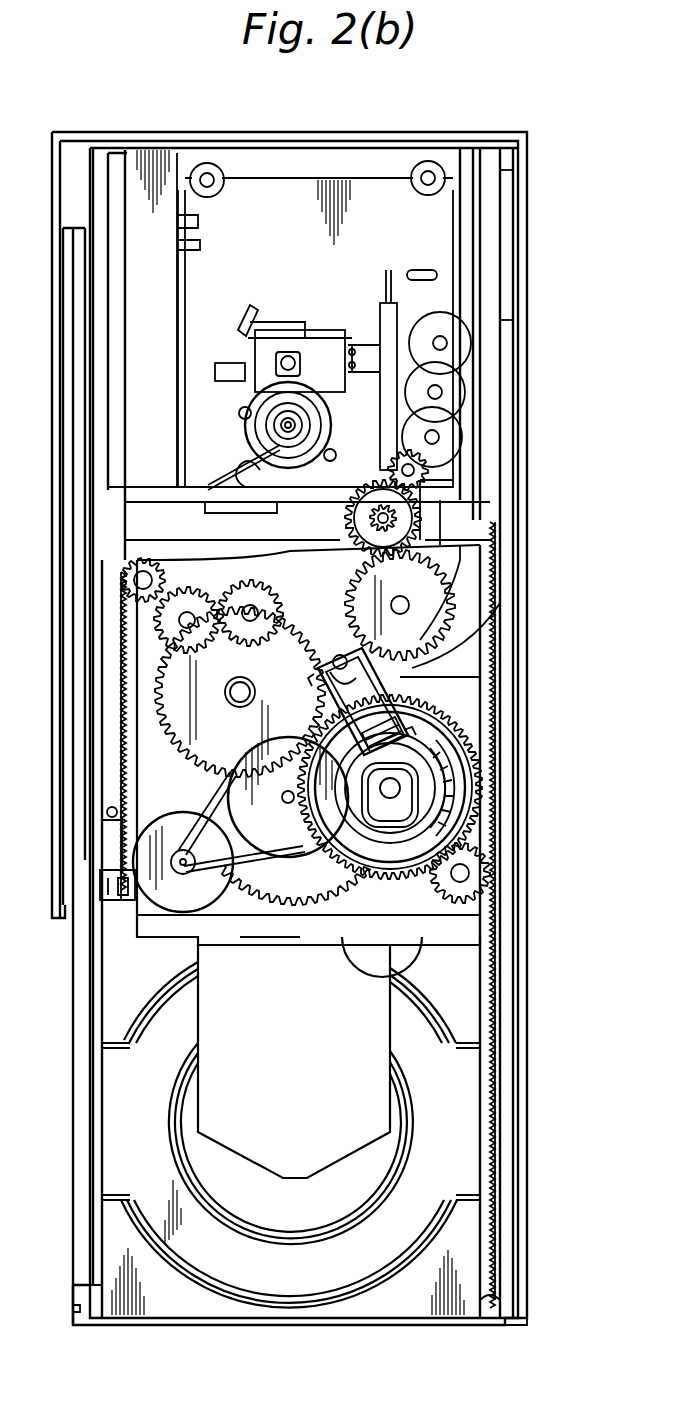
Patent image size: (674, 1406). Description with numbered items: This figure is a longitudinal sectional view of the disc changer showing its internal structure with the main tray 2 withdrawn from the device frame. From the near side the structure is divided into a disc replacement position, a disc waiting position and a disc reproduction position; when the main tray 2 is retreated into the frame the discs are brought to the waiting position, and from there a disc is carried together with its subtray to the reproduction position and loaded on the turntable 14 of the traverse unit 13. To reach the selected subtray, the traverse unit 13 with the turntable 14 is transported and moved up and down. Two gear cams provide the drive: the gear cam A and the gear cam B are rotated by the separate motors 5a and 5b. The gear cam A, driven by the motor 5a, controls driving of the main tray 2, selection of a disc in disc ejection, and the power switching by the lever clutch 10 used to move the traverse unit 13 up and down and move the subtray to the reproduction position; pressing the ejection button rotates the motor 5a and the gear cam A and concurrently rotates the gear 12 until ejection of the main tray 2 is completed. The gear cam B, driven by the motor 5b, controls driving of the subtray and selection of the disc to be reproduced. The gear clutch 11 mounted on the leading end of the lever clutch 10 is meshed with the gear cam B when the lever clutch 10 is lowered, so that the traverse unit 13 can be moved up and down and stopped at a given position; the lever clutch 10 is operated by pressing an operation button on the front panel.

The traverse unit 13 is at (276, 192).
The turntable 14 is at (282, 426).
The motor 5b is at (374, 350).
The motor 5a is at (143, 845).
The gear cam B is at (170, 712).
The gear clutch 11 is at (413, 655).
The lever clutch 10 is at (400, 677).
The gear cam A is at (440, 740).
The gear 12 is at (470, 850).
The main tray 2 is at (513, 1298).